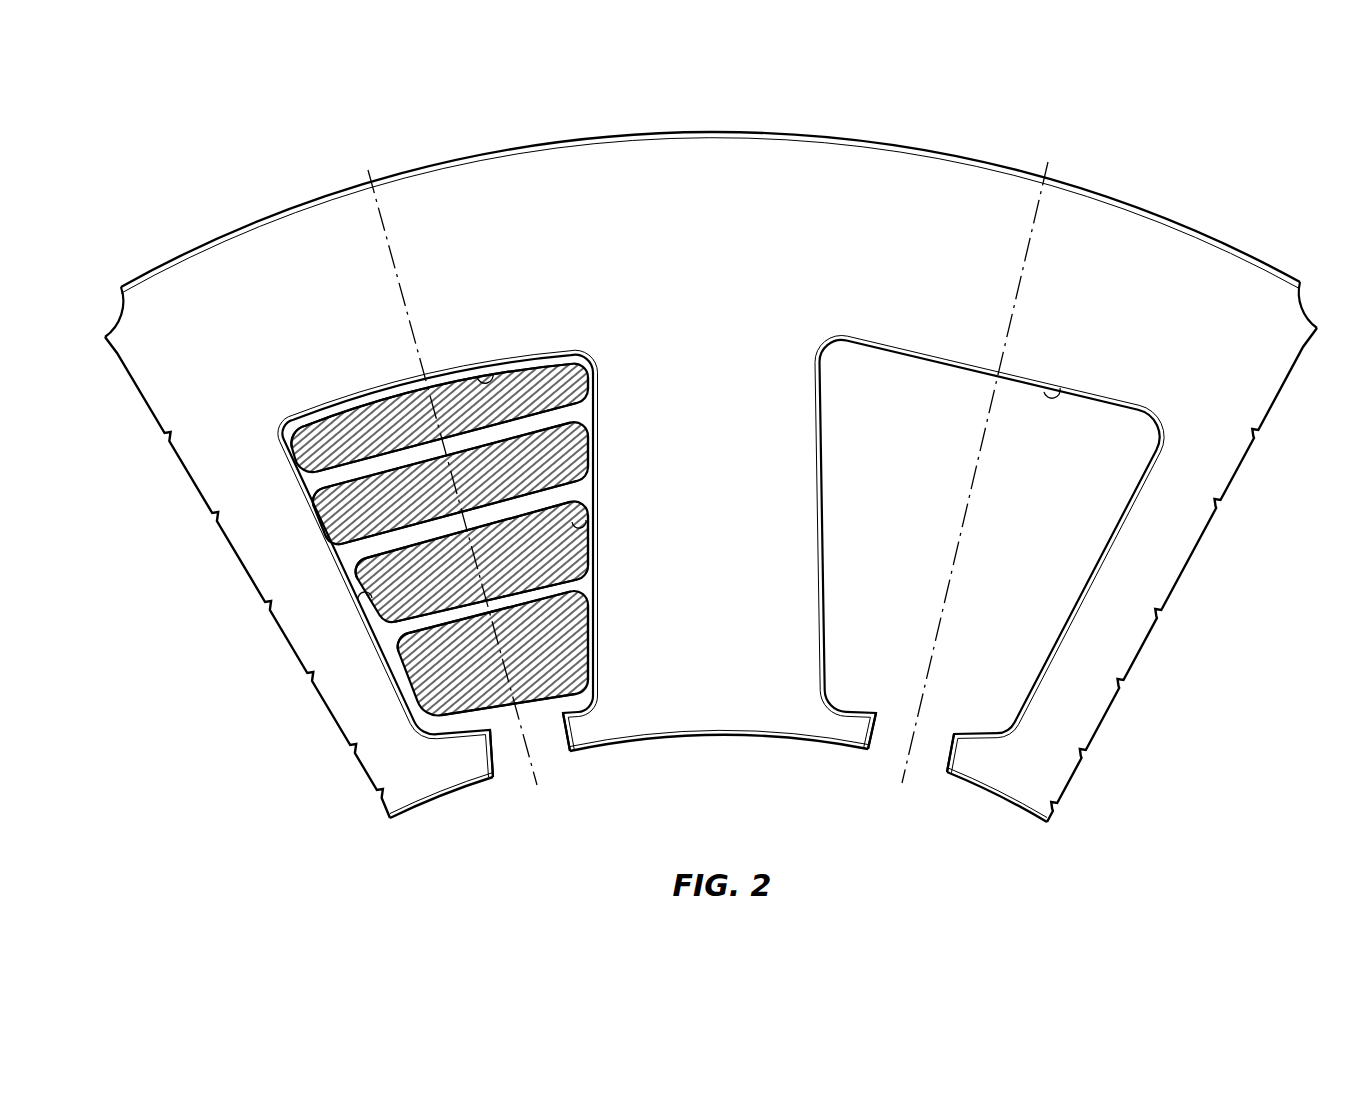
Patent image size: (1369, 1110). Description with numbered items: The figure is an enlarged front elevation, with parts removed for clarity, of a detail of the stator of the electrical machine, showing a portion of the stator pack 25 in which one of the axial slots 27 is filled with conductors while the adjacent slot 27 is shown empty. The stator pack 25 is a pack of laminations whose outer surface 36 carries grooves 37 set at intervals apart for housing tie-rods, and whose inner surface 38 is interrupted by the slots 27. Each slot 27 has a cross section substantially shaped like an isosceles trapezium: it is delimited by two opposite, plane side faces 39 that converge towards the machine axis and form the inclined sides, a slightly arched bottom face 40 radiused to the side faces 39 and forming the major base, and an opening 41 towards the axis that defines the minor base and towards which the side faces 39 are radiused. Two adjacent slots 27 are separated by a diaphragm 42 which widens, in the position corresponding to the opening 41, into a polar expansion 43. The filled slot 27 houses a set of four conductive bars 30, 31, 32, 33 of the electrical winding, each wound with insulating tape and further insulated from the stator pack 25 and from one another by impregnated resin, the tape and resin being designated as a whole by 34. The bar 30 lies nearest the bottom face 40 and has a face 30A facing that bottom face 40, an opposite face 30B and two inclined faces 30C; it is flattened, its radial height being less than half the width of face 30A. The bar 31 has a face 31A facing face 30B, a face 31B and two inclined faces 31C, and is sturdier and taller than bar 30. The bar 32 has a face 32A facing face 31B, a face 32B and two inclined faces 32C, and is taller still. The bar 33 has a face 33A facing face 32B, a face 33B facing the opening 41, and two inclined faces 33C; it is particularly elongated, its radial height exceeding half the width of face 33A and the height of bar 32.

The stator pack 25 is at (683, 152).
The axial slots 27 is at (1068, 486).
The conductive bar 30 is at (543, 380).
The face of bar 30 30A is at (392, 395).
The face of bar 30 30B is at (318, 488).
The inclined faces of bar 30 30C is at (290, 458).
The conductive bar 31 is at (566, 452).
The face of bar 31 31A is at (518, 440).
The face of bar 31 31B is at (348, 545).
The inclined faces of bar 31 31C is at (330, 520).
The conductive bar 32 is at (565, 545).
The face of bar 32 32A is at (575, 494).
The face of bar 32 32B is at (582, 584).
The inclined faces of bar 32 32C is at (360, 588).
The conductive bar 33 is at (560, 647).
The face of bar 33 33A is at (397, 636).
The face of bar 33 33B is at (407, 767).
The inclined faces of bar 33 33C is at (410, 690).
The resin and insulating tape 34 is at (590, 366).
The outer surface 36 is at (803, 138).
The grooves 37 is at (103, 298).
The inner surface 38 is at (790, 748).
The side faces 39 is at (586, 519).
The bottom face 40 is at (482, 380).
The opening 41 is at (510, 755).
The diaphragm 42 is at (275, 607).
The polar expansion 43 is at (422, 790).